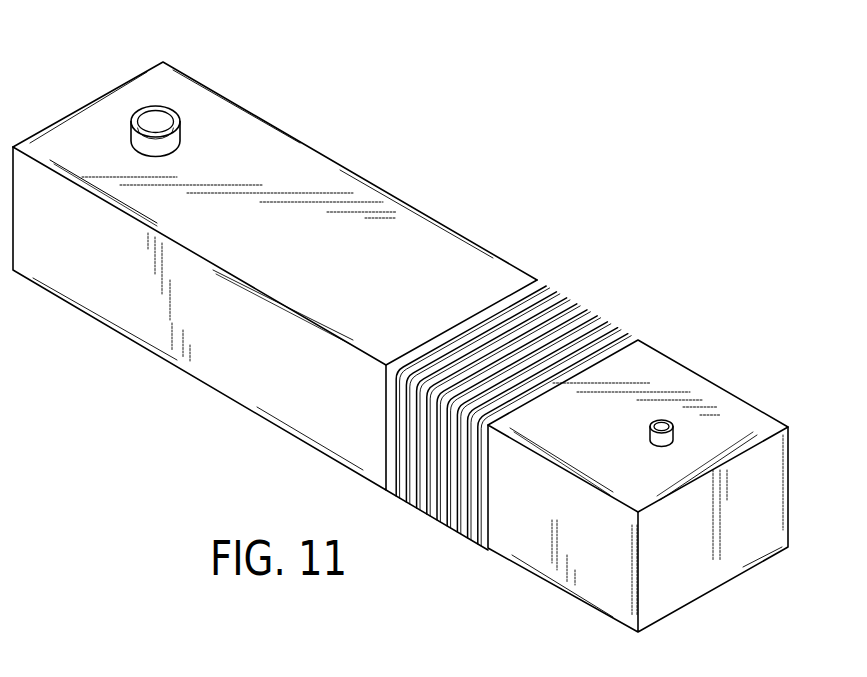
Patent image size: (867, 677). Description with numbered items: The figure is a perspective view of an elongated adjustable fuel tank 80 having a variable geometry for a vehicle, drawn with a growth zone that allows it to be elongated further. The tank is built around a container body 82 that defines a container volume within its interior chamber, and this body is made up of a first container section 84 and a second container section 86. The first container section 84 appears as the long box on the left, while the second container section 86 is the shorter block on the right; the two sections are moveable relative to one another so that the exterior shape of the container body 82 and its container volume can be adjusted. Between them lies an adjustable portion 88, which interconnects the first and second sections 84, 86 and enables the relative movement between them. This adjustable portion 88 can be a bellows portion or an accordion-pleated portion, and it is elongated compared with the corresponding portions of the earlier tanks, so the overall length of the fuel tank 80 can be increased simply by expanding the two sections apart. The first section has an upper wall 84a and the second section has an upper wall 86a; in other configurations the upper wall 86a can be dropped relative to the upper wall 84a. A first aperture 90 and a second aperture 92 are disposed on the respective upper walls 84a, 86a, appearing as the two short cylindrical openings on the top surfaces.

The adjustable fuel tank 80 is at (483, 183).
The container body 82 is at (323, 160).
The first container section 84 is at (137, 305).
The upper wall of first section 84a is at (248, 148).
The second container section 86 is at (542, 555).
The upper wall of second section 86a is at (657, 382).
The adjustable portion 88 is at (567, 308).
The first aperture 90 is at (160, 113).
The second aperture 92 is at (664, 422).